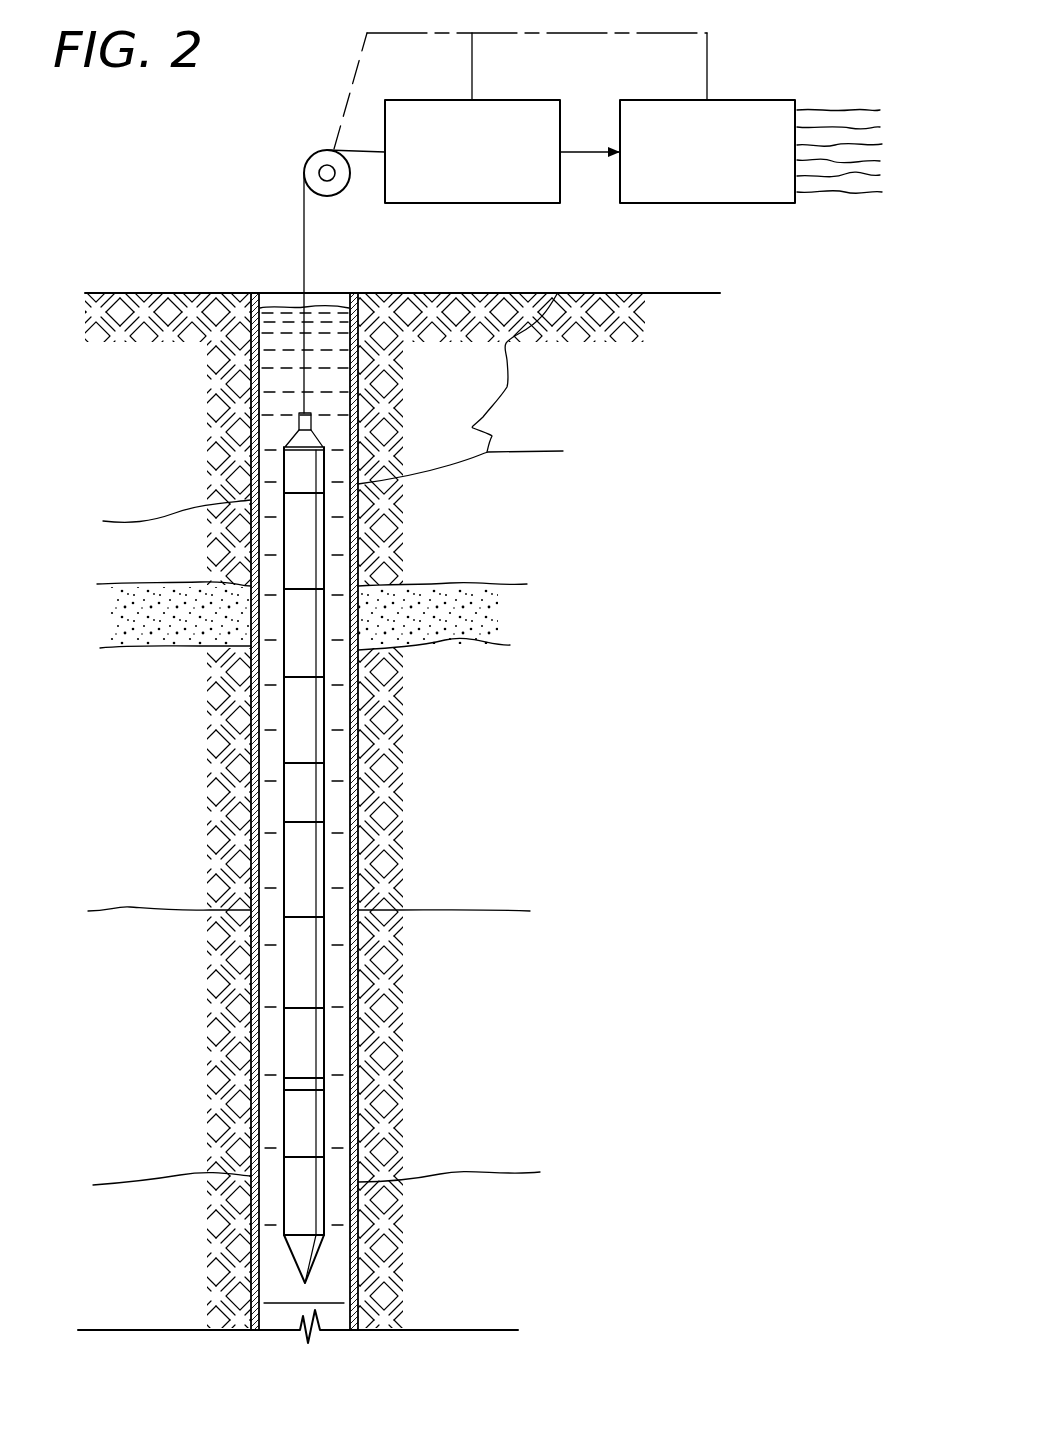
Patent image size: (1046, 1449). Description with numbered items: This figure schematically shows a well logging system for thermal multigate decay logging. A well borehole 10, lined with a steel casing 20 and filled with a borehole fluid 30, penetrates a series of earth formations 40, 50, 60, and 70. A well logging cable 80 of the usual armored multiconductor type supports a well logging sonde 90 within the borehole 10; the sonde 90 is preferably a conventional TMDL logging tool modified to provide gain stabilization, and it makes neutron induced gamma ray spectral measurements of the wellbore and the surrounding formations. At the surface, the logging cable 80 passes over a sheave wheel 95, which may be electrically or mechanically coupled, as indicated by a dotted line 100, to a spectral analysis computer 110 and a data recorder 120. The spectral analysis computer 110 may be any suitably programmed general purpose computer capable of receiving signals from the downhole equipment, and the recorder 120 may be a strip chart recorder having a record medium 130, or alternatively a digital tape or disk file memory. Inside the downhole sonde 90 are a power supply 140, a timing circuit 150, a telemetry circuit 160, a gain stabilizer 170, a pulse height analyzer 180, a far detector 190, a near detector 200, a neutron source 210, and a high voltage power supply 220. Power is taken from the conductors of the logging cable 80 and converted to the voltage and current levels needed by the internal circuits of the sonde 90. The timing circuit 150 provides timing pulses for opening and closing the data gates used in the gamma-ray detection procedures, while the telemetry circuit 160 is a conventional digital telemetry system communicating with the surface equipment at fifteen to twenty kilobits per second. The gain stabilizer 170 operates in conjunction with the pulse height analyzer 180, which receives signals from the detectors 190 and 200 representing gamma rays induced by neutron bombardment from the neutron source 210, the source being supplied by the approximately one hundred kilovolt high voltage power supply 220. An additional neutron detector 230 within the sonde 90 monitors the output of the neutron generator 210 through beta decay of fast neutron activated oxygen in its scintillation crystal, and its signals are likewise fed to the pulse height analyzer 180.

The well borehole 10 is at (271, 263).
The steel casing 20 is at (250, 394).
The borehole fluid 30 is at (340, 403).
The earth formation 40 is at (158, 470).
The earth formation 50 is at (140, 620).
The earth formation 60 is at (157, 794).
The earth formation 70 is at (160, 1043).
The well logging cable 80 is at (305, 250).
The well logging sonde 90 is at (313, 476).
The sheave wheel 95 is at (313, 163).
The dotted line 100 is at (390, 33).
The spectral analysis computer 110 is at (455, 203).
The data recorder 120 is at (697, 203).
The record medium 130 is at (842, 196).
The power supply 140 is at (310, 540).
The timing circuit 150 is at (308, 652).
The telemetry circuit 160 is at (312, 737).
The gain stabilizer 170 is at (312, 791).
The pulse height analyzer 180 is at (313, 875).
The far detector 190 is at (312, 970).
The near detector 200 is at (312, 1050).
The neutron source 210 is at (312, 1120).
The high voltage power supply 220 is at (312, 1207).
The neutron detector 230 is at (283, 1082).